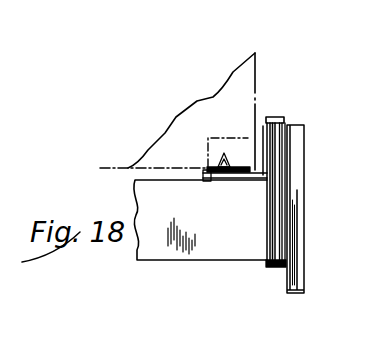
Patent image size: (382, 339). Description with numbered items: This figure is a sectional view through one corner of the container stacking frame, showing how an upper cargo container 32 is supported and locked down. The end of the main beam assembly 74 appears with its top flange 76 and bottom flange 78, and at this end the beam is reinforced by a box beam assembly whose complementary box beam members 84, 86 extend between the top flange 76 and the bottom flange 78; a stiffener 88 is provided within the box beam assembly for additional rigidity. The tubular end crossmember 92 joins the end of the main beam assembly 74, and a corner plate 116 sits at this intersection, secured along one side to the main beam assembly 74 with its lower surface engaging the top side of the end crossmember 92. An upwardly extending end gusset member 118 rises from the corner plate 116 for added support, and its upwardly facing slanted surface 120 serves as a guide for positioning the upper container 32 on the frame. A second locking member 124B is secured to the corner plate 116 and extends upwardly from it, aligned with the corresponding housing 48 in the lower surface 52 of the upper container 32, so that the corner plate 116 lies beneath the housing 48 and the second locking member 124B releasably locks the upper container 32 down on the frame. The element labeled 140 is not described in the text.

The upper cargo container 32 is at (256, 53).
The upwardly facing slanted surface 120 is at (251, 127).
The housing 48 is at (228, 138).
The second locking member 124B is at (218, 172).
The lower surface 52 is at (118, 168).
The top flange 76 is at (279, 117).
The main beam assembly 74 is at (289, 118).
The box beam member 86 is at (283, 153).
The stiffener 88 is at (287, 188).
The guide channel 140 is at (297, 210).
The corner plate 116 is at (205, 180).
The end gusset member 118 is at (254, 178).
The box beam member 84 is at (276, 207).
The end crossmember 92 is at (207, 262).
The bottom flange 78 is at (268, 267).